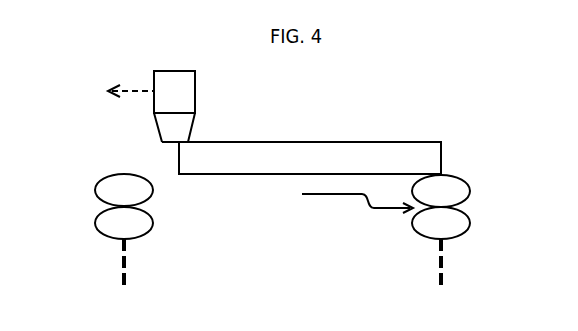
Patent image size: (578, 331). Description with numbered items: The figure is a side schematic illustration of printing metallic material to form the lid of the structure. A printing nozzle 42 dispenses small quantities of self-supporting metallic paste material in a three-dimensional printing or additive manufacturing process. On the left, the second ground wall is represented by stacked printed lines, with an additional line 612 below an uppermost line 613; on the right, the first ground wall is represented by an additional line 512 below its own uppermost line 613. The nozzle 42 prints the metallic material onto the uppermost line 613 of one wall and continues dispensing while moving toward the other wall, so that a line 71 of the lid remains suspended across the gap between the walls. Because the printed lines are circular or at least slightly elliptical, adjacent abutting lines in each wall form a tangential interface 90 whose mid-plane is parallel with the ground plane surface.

The printing nozzle 42 is at (226, 106).
The line of the lid 71 is at (392, 152).
The uppermost line of the second ground wall 613 is at (122, 189).
The additional line of the second ground wall 612 is at (130, 224).
The additional line of the first ground wall 512 is at (443, 222).
The tangential interface 90 is at (345, 199).